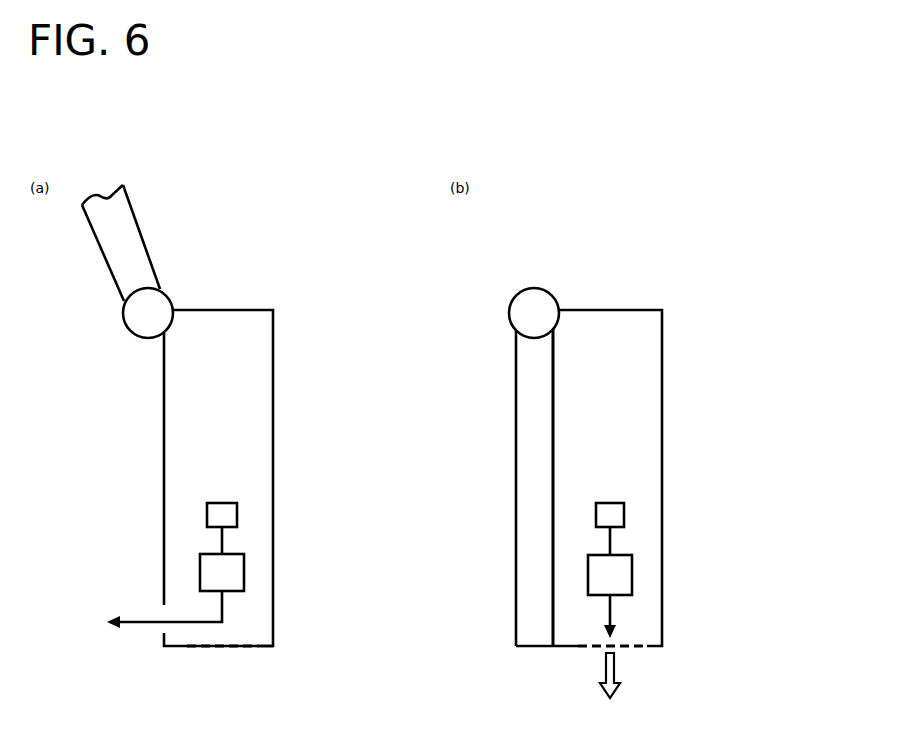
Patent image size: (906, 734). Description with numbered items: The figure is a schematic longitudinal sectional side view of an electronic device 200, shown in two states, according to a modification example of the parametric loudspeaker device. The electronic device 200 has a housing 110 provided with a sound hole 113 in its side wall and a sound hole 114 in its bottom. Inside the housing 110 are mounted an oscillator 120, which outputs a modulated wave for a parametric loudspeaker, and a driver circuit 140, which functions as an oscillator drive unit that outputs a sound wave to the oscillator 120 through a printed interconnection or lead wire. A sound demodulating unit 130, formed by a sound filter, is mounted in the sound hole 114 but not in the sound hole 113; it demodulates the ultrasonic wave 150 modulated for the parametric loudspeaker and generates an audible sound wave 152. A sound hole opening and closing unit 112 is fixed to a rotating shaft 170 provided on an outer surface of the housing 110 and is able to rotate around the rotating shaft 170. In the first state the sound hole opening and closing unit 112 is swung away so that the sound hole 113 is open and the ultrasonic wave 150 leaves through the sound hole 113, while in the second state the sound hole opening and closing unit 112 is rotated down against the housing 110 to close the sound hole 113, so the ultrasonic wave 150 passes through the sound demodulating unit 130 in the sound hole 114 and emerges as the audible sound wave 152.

The housing 110 is at (185, 308).
The sound hole opening and closing unit 112 is at (135, 235).
The sound hole 113 is at (162, 610).
The sound hole 114 is at (213, 656).
The oscillator 120 is at (244, 572).
The sound demodulating unit 130 is at (247, 643).
The driver circuit 140 is at (237, 513).
The ultrasonic wave 150 is at (132, 623).
The audible sound wave 152 is at (612, 668).
The rotating shaft 170 is at (127, 318).
The electronic device 200 is at (345, 295).